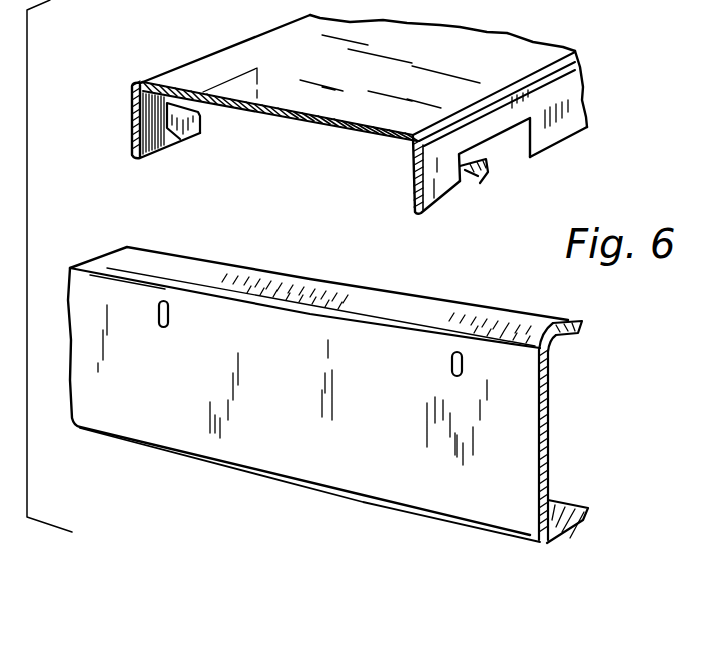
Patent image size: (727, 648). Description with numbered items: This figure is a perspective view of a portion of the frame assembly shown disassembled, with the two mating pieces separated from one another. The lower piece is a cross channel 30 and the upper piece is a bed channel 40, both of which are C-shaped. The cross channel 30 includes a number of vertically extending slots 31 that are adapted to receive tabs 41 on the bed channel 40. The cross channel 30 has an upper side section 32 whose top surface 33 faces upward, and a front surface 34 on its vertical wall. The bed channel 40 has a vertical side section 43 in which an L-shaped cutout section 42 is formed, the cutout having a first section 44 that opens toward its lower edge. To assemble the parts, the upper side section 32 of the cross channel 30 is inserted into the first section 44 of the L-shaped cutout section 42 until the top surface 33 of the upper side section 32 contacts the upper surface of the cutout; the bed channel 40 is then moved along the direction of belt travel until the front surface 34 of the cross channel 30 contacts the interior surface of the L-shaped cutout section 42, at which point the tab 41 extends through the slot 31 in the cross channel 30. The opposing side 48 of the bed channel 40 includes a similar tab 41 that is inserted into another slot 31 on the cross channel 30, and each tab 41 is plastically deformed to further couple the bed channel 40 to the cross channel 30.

The cross channel 30 is at (503, 431).
The slot 31 is at (168, 316).
The upper side section 32 is at (556, 322).
The top surface 33 is at (490, 310).
The front surface 34 is at (503, 397).
The bed channel 40 is at (490, 47).
The tab 41 is at (183, 137).
The L-shaped cutout section 42 is at (548, 144).
The vertical side section 43 is at (570, 80).
The first section 44 is at (510, 150).
The opposing side 48 is at (136, 113).